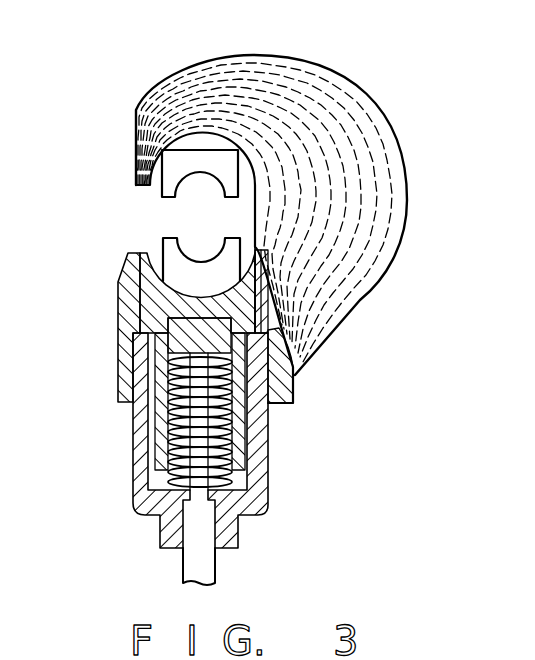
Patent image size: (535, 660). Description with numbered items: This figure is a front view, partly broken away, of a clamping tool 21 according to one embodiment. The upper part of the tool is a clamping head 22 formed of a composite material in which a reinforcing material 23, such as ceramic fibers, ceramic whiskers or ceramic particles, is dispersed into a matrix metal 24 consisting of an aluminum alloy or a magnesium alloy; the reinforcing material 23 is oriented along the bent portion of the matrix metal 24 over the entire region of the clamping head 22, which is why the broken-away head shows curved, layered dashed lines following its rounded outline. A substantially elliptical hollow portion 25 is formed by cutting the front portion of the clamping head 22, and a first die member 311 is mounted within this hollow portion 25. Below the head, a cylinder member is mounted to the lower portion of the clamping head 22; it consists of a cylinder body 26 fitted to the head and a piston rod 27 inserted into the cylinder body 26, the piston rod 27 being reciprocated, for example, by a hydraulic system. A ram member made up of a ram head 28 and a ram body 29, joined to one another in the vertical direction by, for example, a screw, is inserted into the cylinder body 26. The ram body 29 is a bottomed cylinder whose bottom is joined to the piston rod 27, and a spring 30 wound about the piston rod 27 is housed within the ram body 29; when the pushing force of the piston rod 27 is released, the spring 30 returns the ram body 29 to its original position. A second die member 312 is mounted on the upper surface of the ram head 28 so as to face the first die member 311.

The clamping tool 21 is at (289, 18).
The clamping head 22 is at (370, 99).
The reinforcing material 23 is at (352, 210).
The matrix metal 24 is at (397, 237).
The hollow portion 25 is at (180, 215).
The cylinder body 26 is at (262, 467).
The piston rod 27 is at (175, 503).
The ram head 28 is at (117, 285).
The ram body 29 is at (118, 342).
The spring 30 is at (157, 422).
The first die member 311 is at (200, 150).
The second die member 312 is at (168, 250).